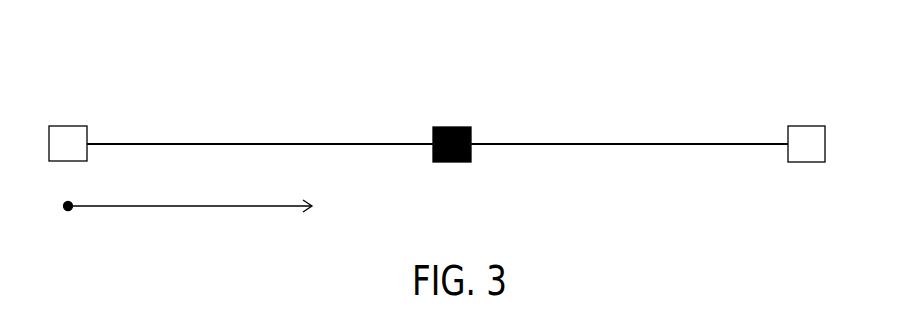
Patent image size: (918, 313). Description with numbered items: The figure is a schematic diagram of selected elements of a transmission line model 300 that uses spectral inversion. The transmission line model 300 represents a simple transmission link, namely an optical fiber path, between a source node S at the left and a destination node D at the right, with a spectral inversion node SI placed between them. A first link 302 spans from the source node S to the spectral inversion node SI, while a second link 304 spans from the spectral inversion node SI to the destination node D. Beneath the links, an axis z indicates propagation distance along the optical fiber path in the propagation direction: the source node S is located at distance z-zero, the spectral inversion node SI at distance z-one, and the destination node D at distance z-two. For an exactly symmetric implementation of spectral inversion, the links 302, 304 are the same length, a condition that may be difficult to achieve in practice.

The transmission line model 300 is at (113, 88).
The link 302 is at (272, 143).
The link 304 is at (631, 142).